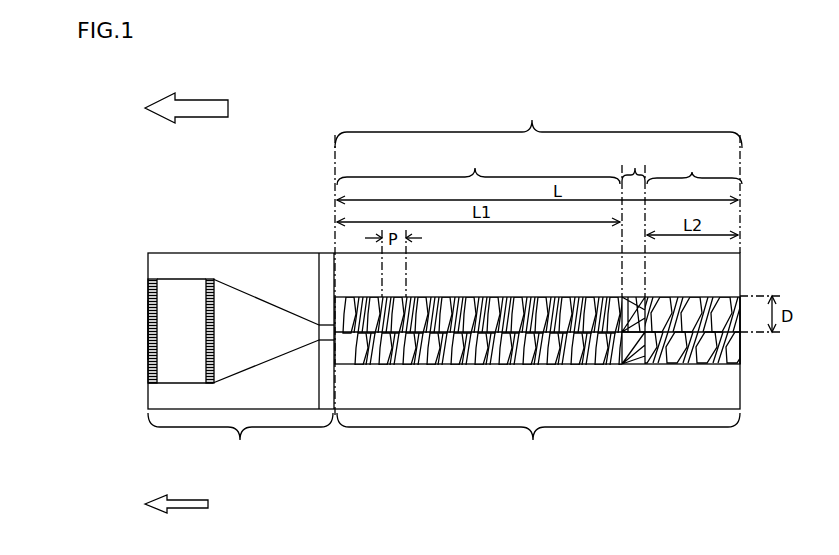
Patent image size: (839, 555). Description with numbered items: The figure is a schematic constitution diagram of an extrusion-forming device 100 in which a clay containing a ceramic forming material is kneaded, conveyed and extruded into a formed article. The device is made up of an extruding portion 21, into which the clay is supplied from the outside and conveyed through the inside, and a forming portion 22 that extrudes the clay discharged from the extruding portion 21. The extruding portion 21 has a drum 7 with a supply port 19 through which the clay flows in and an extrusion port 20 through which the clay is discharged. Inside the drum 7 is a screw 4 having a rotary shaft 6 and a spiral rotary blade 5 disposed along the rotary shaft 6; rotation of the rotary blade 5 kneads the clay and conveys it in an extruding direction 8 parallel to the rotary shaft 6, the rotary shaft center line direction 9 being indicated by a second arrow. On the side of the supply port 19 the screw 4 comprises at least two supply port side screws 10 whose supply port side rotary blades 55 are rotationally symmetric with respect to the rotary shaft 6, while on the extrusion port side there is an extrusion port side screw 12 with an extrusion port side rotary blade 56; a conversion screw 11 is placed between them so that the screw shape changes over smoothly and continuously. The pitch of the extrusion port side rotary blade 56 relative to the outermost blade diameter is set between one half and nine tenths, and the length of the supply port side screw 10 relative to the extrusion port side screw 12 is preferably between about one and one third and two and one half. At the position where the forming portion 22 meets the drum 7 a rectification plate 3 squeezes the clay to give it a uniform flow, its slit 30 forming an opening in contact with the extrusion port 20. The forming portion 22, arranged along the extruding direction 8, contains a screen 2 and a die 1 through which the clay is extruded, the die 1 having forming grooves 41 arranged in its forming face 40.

The extrusion-forming device 100 is at (803, 97).
The extruding direction 8 is at (282, 99).
The rotary shaft center line direction 9 is at (192, 497).
The drum 7 is at (538, 124).
The extrusion port side screw 12 is at (478, 167).
The conversion screw 11 is at (638, 164).
The supply port side screw 10 is at (694, 168).
The screw 4 is at (528, 294).
The rotary blade 5 is at (535, 300).
The rotary shaft 6 is at (550, 300).
The extrusion port side rotary blade 56 is at (363, 366).
The supply port side rotary blade 55 is at (660, 364).
The extruding portion 21 is at (538, 439).
The forming portion 22 is at (240, 440).
The rectification plate 3 is at (328, 268).
The extrusion port 20 is at (320, 297).
The slit 30 is at (327, 333).
The die 1 is at (152, 278).
The screen 2 is at (213, 278).
The forming face 40 is at (147, 318).
The forming groove 41 is at (150, 347).
The supply port 19 is at (744, 332).